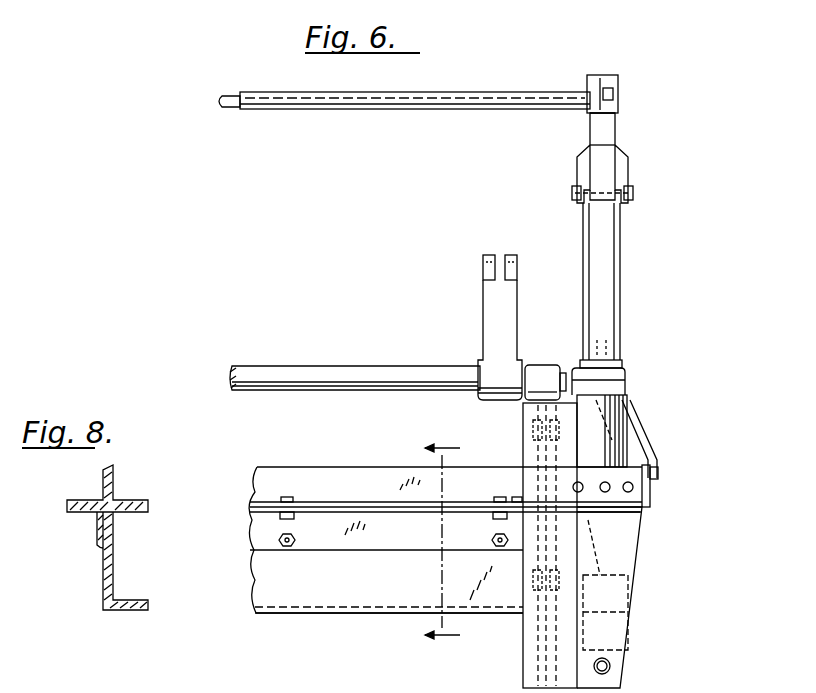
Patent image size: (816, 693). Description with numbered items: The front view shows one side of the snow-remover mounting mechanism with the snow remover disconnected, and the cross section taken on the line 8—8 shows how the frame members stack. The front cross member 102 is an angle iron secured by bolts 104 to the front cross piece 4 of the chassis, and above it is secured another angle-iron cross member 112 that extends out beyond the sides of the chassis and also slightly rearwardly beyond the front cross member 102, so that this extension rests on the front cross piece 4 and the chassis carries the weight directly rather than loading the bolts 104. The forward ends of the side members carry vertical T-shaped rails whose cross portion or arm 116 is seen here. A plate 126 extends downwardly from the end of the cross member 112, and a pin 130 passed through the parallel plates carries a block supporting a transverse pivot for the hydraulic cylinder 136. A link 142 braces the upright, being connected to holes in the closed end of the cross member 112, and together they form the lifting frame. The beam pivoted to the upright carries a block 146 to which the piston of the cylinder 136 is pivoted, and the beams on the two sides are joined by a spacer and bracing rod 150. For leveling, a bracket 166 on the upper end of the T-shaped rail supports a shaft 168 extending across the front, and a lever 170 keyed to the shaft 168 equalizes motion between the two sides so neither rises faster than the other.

In FIG. 6, the spacer and bracing rod 150 is at (446, 104).
In FIG. 6, the block 146 is at (622, 158).
In FIG. 6, the lever 170 is at (492, 303).
In FIG. 6, the shaft 168 is at (375, 367).
In FIG. 6, the bracket 166 is at (543, 372).
In FIG. 6, the cross portion or arm 116 is at (525, 660).
In FIG. 6, the hydraulic cylinder 136 is at (620, 412).
In FIG. 6, the link 142 is at (654, 458).
In FIG. 6, the cross member 112 is at (320, 467).
In FIG. 8, the cross member 112 is at (112, 485).
In FIG. 6, the front cross member 102 is at (252, 543).
In FIG. 8, the front cross member 102 is at (97, 535).
In FIG. 6, the bolt 104 is at (289, 548).
In FIG. 6, the front cross piece 4 is at (373, 614).
In FIG. 8, the front cross piece 4 is at (113, 582).
In FIG. 6, the plate 126 is at (636, 558).
In FIG. 6, the pin 130 is at (612, 667).
In FIG. 6, the section line 8— 8 is at (442, 544).